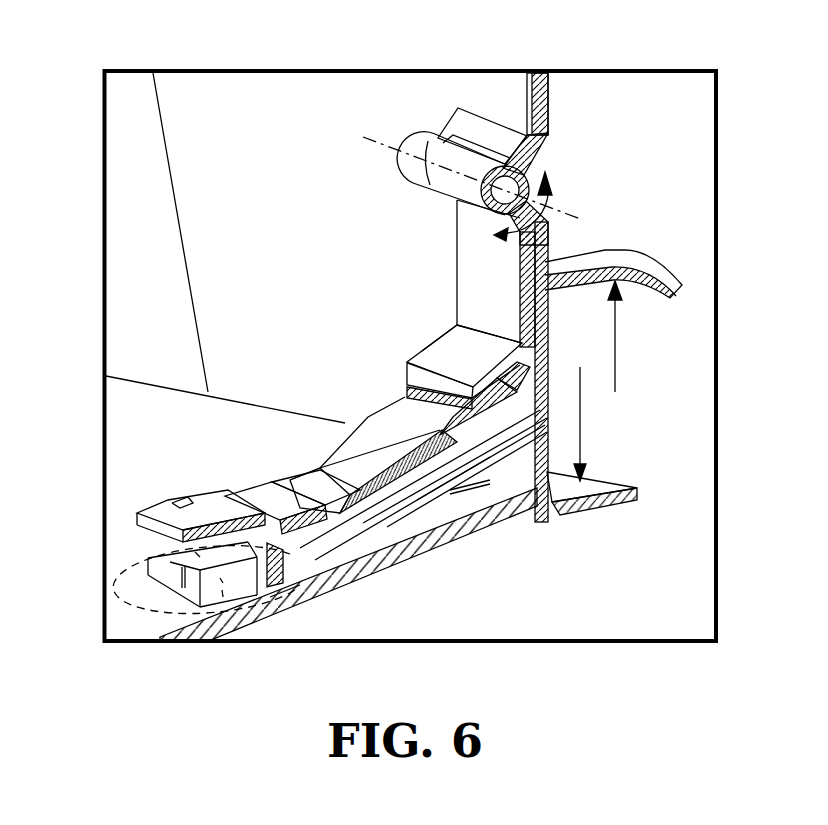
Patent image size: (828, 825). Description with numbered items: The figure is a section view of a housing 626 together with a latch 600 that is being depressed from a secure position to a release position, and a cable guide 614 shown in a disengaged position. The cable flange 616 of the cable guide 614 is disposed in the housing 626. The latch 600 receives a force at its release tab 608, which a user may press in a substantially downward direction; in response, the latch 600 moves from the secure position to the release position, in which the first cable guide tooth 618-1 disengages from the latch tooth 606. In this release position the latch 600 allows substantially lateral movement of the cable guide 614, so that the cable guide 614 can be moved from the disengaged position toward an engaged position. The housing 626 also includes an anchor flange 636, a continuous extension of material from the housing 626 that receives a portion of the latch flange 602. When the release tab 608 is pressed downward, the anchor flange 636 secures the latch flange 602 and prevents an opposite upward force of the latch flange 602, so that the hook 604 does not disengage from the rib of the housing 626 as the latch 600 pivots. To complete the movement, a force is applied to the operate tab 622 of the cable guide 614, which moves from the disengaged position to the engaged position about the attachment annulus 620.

The latch 600 is at (392, 537).
The latch flange 602 is at (368, 562).
The hook 604 is at (130, 545).
The latch tooth 606 is at (563, 512).
The release tab 608 is at (610, 483).
The cable guide 614 is at (392, 425).
The cable flange 616 is at (345, 448).
The first cable guide tooth 618-1 is at (530, 518).
The attachment annulus 620 is at (470, 160).
The operate tab 622 is at (588, 262).
The housing 626 is at (153, 176).
The anchor flange 636 is at (270, 598).